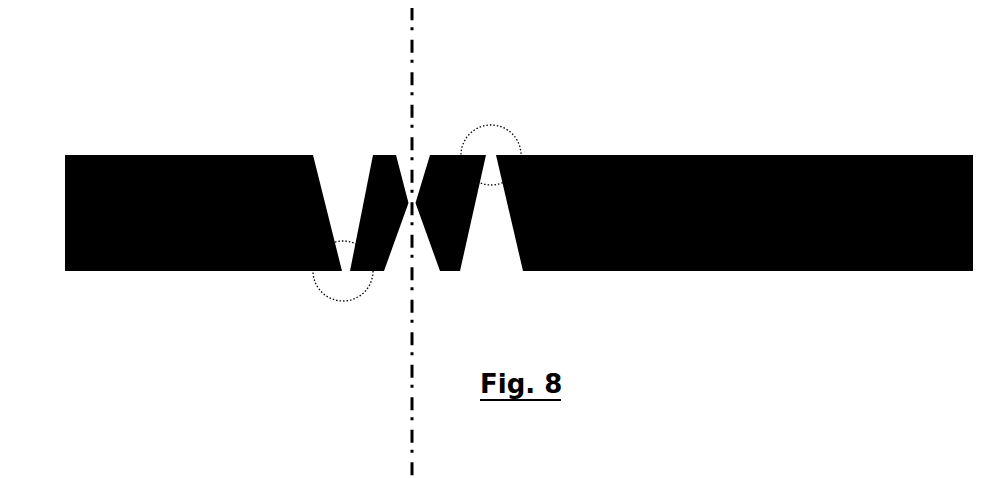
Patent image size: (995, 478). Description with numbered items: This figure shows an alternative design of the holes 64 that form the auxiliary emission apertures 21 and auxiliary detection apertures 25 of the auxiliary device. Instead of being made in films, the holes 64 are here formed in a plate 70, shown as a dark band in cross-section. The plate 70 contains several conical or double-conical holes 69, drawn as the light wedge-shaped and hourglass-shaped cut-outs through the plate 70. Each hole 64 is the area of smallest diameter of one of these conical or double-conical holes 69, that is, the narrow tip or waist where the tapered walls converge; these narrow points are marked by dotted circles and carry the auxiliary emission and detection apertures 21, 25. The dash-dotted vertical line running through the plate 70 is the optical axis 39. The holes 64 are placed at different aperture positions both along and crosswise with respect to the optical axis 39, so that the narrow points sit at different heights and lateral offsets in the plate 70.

The auxiliary emission aperture 21 is at (404, 207).
The auxiliary detection aperture 25 is at (404, 207).
The hole 64 is at (305, 348).
The optical axis 39 is at (403, 43).
The conical or double-conical hole 69 is at (335, 178).
The plate 70 is at (875, 263).